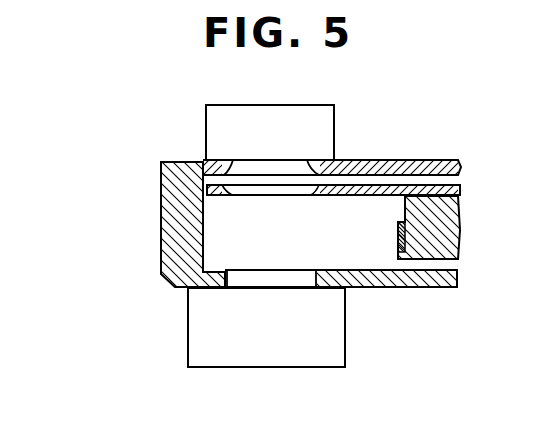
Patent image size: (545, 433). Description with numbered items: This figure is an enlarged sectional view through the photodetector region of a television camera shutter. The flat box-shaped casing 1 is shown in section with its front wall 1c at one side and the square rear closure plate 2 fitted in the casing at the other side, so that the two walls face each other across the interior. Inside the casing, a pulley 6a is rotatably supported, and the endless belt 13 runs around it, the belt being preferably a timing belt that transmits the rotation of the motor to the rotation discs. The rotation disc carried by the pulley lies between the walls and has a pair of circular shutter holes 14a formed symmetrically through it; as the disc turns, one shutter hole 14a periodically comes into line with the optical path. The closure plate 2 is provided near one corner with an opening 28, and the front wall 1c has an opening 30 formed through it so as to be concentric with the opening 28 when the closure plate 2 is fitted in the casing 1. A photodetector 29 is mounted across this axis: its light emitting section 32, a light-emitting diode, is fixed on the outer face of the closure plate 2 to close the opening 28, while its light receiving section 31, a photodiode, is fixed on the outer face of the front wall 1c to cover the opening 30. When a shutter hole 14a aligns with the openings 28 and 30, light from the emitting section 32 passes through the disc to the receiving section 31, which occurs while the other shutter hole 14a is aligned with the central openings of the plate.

The casing 1 is at (162, 262).
The front wall 1c is at (390, 280).
The rear closure plate 2 is at (378, 160).
The pulley 6a is at (400, 210).
The endless belt 13 is at (400, 235).
The shutter holes 14a is at (228, 196).
The opening 28 is at (229, 162).
The photodetector 29 is at (312, 100).
The opening 30 is at (228, 280).
The light receiving section 31 is at (345, 337).
The light emitting section 32 is at (245, 105).